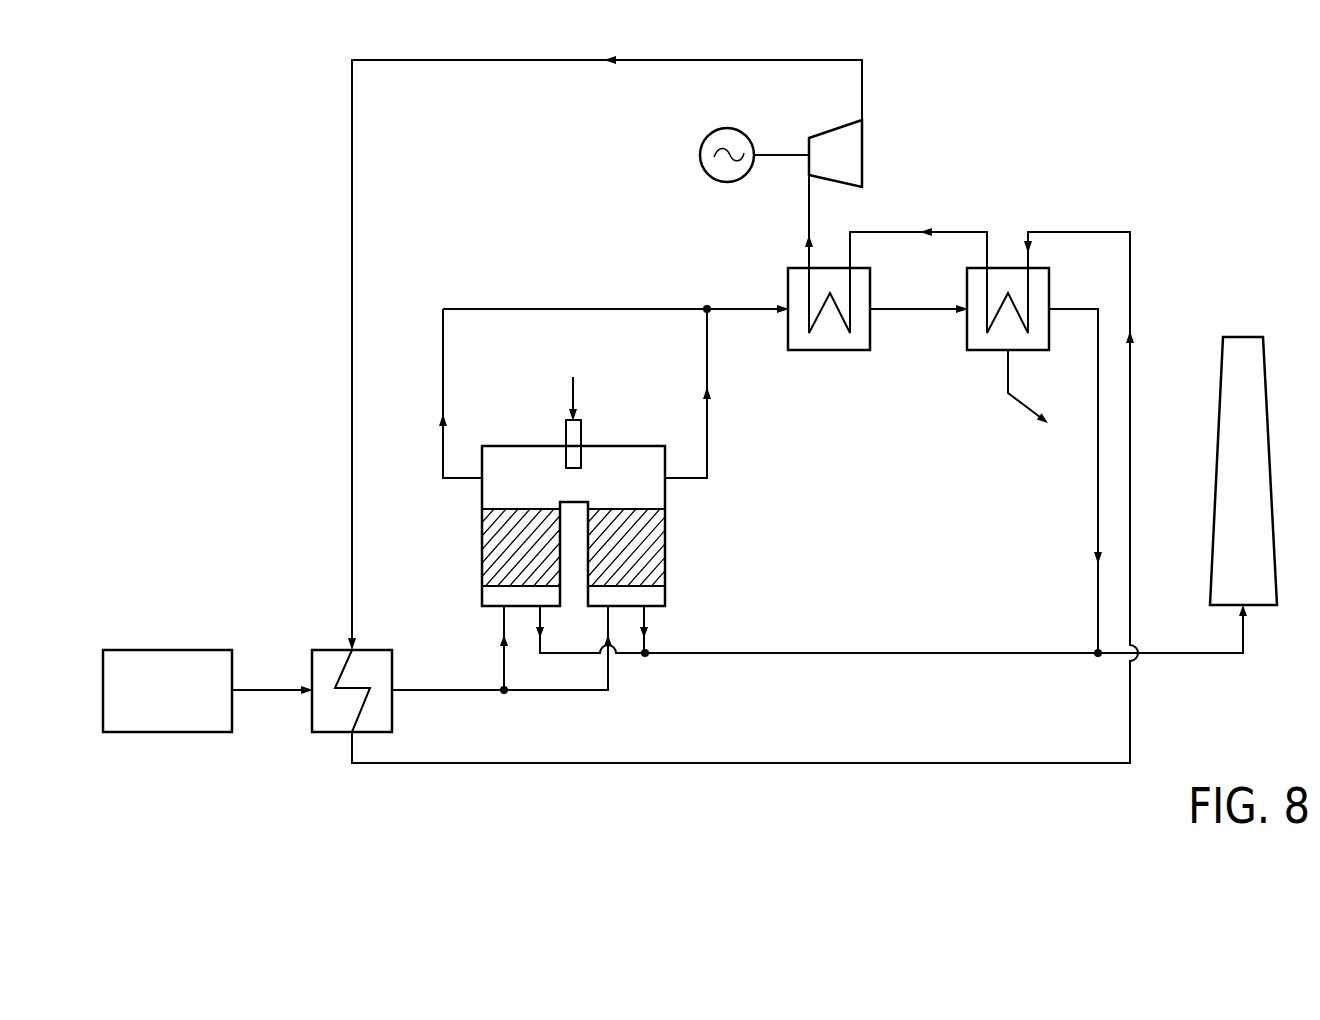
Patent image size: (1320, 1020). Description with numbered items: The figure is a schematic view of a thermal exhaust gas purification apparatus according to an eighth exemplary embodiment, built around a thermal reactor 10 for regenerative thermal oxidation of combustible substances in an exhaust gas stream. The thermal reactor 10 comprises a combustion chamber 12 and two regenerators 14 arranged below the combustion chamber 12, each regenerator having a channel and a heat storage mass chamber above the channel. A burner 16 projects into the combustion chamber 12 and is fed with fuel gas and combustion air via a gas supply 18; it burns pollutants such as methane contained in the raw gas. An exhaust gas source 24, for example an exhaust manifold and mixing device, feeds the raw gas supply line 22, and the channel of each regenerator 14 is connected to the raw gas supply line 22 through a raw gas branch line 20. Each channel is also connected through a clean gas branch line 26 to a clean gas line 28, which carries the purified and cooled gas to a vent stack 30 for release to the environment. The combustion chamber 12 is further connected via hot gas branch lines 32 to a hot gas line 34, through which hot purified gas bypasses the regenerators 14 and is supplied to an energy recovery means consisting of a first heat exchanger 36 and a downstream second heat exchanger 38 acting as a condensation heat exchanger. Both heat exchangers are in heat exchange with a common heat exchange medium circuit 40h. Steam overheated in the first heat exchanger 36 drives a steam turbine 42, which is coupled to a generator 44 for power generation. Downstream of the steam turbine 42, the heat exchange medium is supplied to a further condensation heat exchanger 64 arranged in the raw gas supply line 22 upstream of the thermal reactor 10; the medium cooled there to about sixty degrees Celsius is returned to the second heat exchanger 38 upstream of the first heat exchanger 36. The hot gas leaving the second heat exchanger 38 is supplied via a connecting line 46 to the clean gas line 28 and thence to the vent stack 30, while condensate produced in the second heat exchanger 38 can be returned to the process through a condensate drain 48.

The thermal reactor 10 is at (589, 482).
The combustion chamber 12 is at (512, 445).
The regenerators 14 is at (494, 547).
The burner 16 is at (581, 440).
The gas supply 18 is at (576, 394).
The raw gas branch line 20 is at (503, 652).
The raw gas supply line 22 is at (275, 695).
The exhaust gas source 24 is at (166, 650).
The clean gas branch line 26 is at (545, 652).
The clean gas line 28 is at (961, 656).
The vent stack 30 is at (1220, 486).
The hot gas branch lines 32 is at (443, 362).
The hot gas line 34 is at (735, 308).
The first heat exchanger 36 is at (824, 352).
The second heat exchanger 38 is at (967, 340).
The heat exchange medium circuit 40h is at (993, 209).
The steam turbine 42 is at (830, 128).
The generator 44 is at (712, 132).
The connecting line 46 is at (1098, 532).
The condensate drain 48 is at (1020, 406).
The further condensation heat exchanger 64 is at (332, 650).